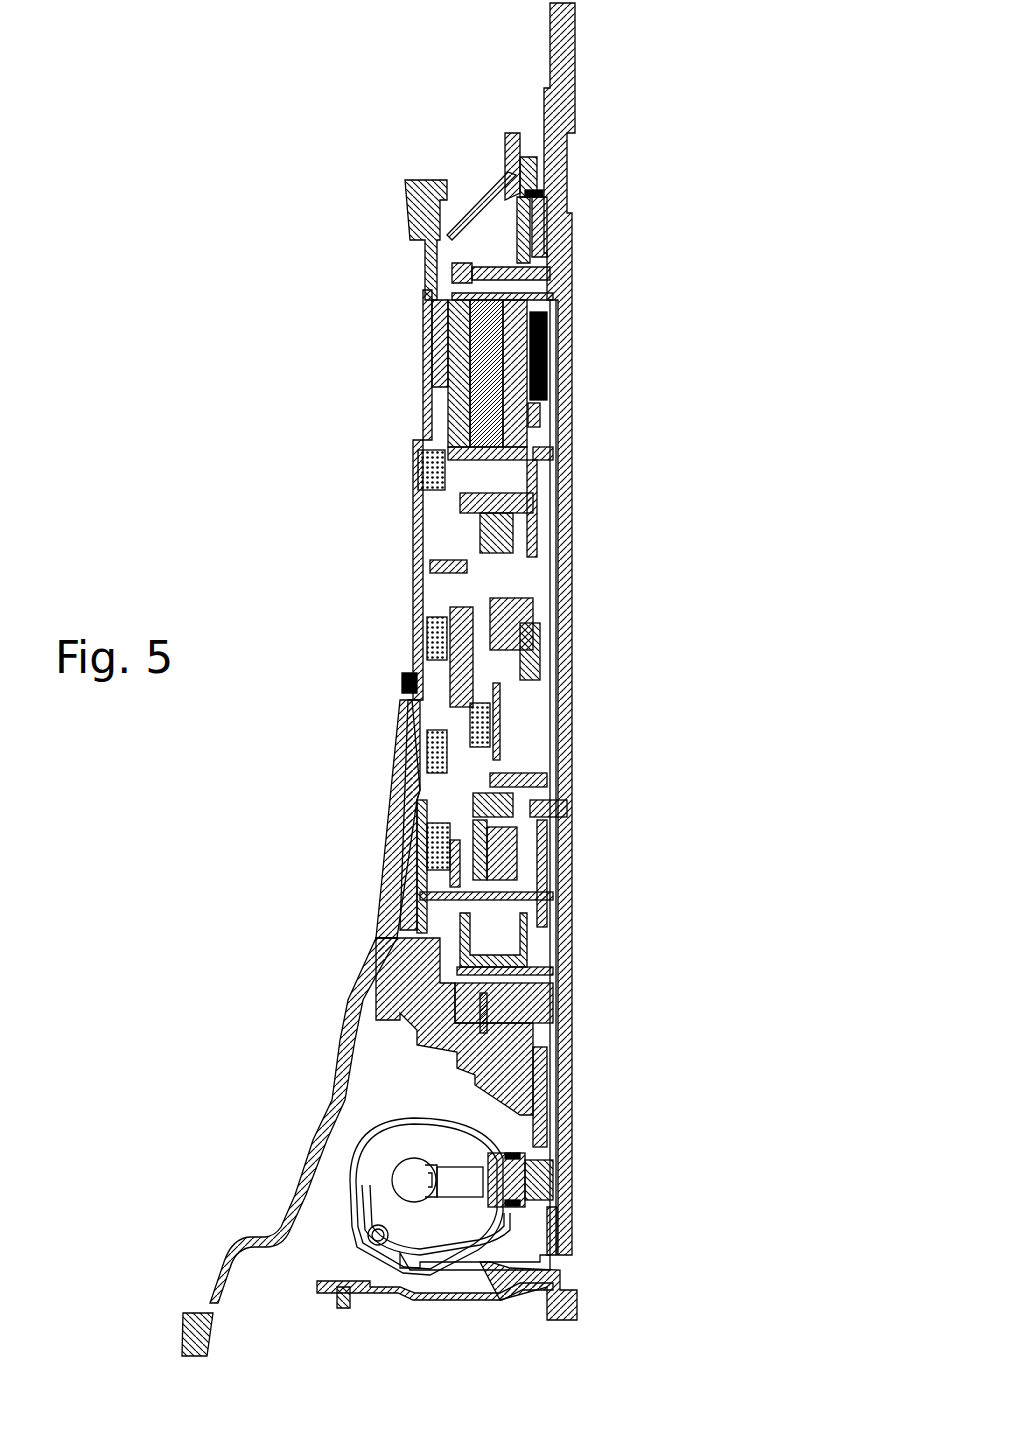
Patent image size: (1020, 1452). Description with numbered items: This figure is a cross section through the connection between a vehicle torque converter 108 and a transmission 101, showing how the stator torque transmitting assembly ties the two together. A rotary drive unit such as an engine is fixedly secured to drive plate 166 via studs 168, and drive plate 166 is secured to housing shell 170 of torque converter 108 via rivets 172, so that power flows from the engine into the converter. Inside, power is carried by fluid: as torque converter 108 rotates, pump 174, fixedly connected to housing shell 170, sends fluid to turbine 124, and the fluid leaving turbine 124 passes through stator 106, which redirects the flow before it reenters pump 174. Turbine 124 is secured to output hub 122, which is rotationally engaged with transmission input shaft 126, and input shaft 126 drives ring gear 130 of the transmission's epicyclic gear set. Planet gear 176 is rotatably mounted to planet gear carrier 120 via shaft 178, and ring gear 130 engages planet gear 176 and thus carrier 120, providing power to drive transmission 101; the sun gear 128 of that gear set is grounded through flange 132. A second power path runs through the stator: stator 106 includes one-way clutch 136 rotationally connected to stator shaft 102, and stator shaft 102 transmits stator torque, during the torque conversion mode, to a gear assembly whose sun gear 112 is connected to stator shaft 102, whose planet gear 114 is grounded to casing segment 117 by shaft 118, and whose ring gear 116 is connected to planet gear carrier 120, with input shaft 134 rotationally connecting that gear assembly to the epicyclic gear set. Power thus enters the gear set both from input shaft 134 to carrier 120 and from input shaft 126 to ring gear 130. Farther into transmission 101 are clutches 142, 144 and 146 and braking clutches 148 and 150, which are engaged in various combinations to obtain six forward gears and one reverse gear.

The transmission 101 is at (401, 475).
The stator shaft 102 is at (553, 1163).
The stator 106 is at (457, 1178).
The torque converter 108 is at (397, 1147).
The sun gear 112 is at (570, 975).
The planet gear 114 is at (570, 1012).
The ring gear 116 is at (470, 1000).
The casing segment 117 is at (403, 1000).
The shaft 118 is at (570, 1048).
The planet gear carrier 120 is at (565, 768).
The output hub 122 is at (572, 1257).
The turbine 124 is at (383, 1192).
The transmission input shaft 126 is at (570, 1236).
The sun gear 128 is at (537, 858).
The ring gear 130 is at (397, 840).
The flange 132 is at (387, 897).
The input shaft 134 is at (517, 883).
The one-way clutch 136 is at (540, 1180).
The clutch 142 is at (407, 768).
The clutch 144 is at (407, 677).
The clutch 146 is at (570, 632).
The braking clutch 148 is at (410, 597).
The braking clutch 150 is at (422, 437).
The drive plate 166 is at (415, 1290).
The studs 168 is at (340, 1308).
The housing shell 170 is at (355, 1248).
The rivets 172 is at (505, 1302).
The pump 174 is at (357, 1153).
The planet gear 176 is at (570, 935).
The shaft 178 is at (553, 890).